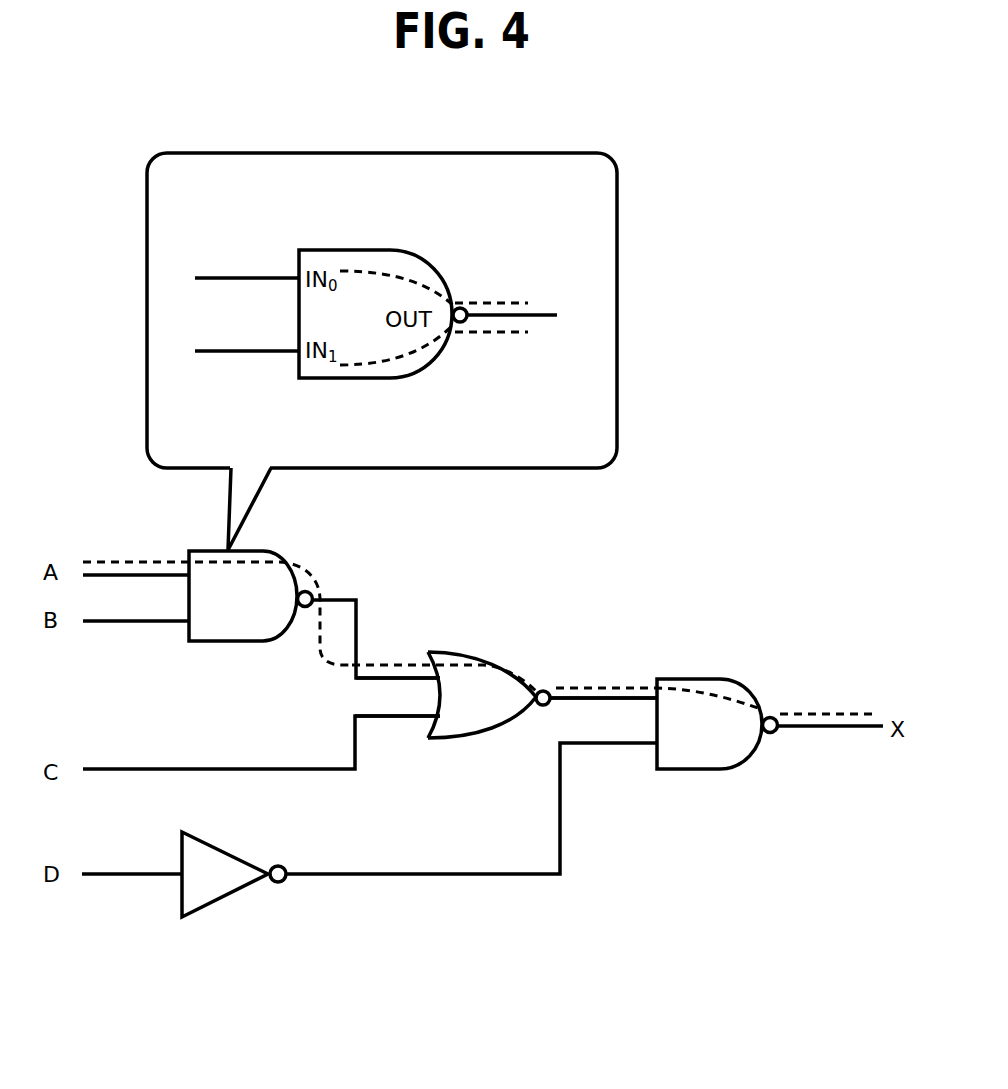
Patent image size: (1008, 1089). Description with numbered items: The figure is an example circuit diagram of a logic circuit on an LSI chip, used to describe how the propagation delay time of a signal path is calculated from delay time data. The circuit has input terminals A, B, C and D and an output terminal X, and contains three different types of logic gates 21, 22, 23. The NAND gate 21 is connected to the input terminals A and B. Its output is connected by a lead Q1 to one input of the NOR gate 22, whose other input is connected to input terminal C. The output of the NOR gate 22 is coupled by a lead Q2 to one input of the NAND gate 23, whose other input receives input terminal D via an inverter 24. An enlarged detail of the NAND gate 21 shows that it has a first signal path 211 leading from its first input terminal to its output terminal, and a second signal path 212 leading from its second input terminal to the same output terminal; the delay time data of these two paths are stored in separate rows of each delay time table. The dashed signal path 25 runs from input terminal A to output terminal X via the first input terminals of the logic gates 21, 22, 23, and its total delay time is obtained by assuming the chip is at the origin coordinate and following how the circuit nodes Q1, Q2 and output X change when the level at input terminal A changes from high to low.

The NAND gate 21 is at (265, 551).
The NOR gate 22 is at (484, 655).
The NAND gate 23 is at (719, 678).
The inverter 24 is at (216, 845).
The signal path 25 is at (398, 662).
The first signal path 211 is at (392, 277).
The second signal path 212 is at (393, 353).
The lead Q1 is at (391, 678).
The lead Q2 is at (603, 698).